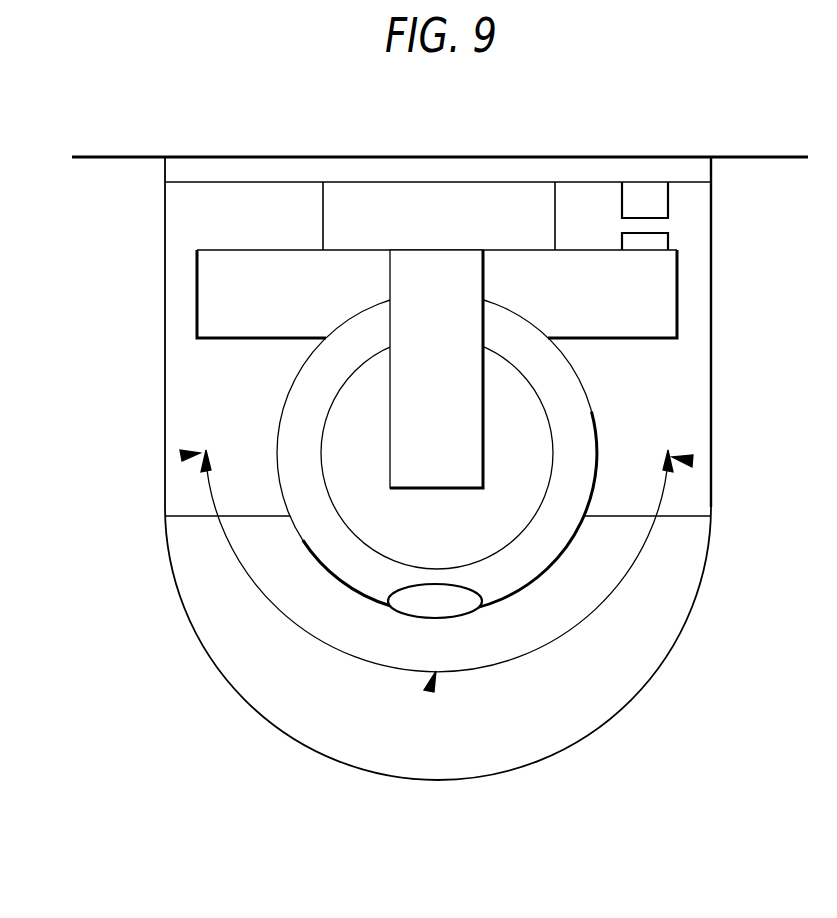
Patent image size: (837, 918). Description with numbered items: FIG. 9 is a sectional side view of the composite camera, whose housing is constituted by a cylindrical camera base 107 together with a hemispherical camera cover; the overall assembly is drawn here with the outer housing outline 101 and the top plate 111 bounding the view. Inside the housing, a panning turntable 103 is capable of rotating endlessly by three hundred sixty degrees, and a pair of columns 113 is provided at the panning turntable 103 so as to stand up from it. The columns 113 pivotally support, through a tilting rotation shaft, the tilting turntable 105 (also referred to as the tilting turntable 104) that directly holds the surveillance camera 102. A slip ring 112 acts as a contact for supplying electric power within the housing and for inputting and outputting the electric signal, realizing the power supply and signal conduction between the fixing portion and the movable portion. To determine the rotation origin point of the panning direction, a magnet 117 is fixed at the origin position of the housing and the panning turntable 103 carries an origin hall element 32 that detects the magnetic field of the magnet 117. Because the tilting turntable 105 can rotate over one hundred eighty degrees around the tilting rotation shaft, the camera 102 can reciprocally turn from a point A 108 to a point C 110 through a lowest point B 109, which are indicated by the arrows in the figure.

The housing 101 is at (253, 712).
The surveillance camera 102 is at (448, 618).
The panning turntable 103 is at (212, 250).
The tilting turntable 104 is at (630, 572).
The tilting turntable 105 is at (435, 437).
The camera base 107 is at (716, 380).
The point A 108 is at (198, 454).
The lowest point B 109 is at (433, 678).
The point C 110 is at (690, 460).
The top plate 111 is at (440, 145).
The slip ring 112 is at (440, 205).
The columns 113 is at (423, 287).
The magnet 117 is at (668, 200).
The origin hall element 32 is at (668, 240).